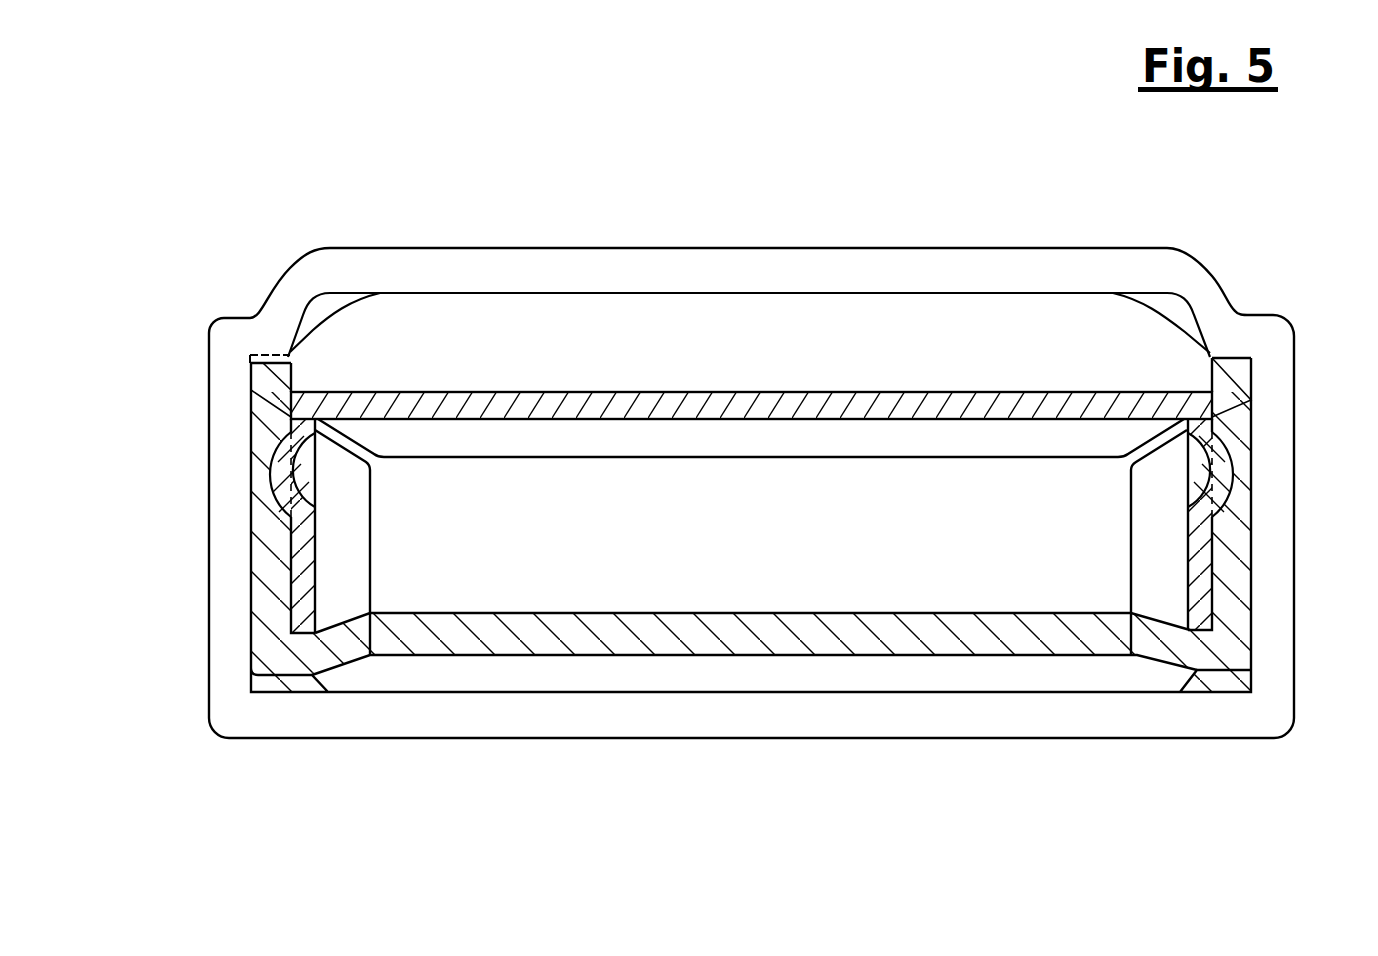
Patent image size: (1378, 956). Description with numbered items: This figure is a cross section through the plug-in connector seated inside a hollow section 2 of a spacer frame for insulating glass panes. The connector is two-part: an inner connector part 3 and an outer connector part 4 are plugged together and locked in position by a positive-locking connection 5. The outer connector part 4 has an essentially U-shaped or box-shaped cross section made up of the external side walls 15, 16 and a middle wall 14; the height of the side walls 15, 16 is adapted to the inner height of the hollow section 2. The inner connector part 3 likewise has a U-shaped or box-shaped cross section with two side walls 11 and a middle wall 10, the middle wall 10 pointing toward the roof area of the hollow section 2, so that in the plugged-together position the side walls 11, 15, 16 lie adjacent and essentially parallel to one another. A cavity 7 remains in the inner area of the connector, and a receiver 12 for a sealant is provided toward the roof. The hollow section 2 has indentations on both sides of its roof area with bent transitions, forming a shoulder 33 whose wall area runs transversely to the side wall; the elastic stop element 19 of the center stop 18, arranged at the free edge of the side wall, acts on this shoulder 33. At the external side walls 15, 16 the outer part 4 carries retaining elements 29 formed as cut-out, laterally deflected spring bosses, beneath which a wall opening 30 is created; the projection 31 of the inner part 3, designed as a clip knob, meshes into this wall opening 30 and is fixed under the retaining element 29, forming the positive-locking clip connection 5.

The hollow section 2 is at (735, 265).
The inner connector part 3 is at (702, 394).
The outer connector part 4 is at (915, 635).
The positive-locking connection 5 is at (262, 486).
The cavity 7 is at (625, 540).
The middle wall 10 is at (843, 419).
The side wall 11 is at (307, 552).
The receiver 12 is at (980, 392).
The middle wall 14 is at (965, 612).
The side wall 15 is at (268, 583).
The side wall 16 is at (1237, 555).
The center stop 18 is at (233, 358).
The stop element 19 is at (270, 352).
The retaining element 29 is at (1230, 378).
The wall opening 30 is at (1240, 418).
The projection 31 is at (1218, 458).
The shoulder 33 is at (1227, 325).